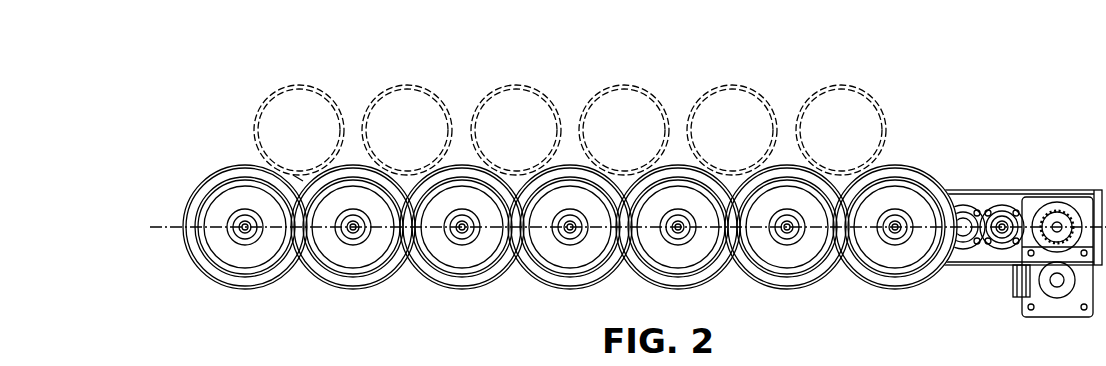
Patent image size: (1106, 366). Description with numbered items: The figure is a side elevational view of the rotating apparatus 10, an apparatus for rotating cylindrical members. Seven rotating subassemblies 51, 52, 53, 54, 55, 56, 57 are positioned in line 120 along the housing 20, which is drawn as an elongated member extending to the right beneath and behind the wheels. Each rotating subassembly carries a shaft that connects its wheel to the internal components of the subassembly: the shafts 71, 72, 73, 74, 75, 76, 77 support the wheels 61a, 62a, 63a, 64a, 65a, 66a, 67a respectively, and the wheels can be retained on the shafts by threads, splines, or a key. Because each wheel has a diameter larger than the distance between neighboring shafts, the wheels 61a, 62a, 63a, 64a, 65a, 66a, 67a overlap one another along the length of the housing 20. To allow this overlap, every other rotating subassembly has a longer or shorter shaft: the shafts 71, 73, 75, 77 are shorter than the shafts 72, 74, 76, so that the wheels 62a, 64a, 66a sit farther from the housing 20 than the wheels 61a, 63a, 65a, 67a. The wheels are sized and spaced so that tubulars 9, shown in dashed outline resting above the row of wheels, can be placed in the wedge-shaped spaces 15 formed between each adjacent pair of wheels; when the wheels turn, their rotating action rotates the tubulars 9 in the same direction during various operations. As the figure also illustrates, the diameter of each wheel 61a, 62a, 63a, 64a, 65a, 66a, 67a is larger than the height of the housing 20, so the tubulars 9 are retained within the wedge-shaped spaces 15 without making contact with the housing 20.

The rotating apparatus 10 is at (1004, 100).
The tubulars 9 is at (293, 140).
The wedge-shaped spaces 15 is at (295, 172).
The housing 20 is at (980, 265).
The rotating subassembly 51 is at (892, 158).
The rotating subassembly 52 is at (784, 158).
The rotating subassembly 53 is at (675, 158).
The rotating subassembly 54 is at (567, 158).
The rotating subassembly 55 is at (459, 158).
The rotating subassembly 56 is at (350, 158).
The rotating subassembly 57 is at (226, 163).
The wheel 61a is at (900, 164).
The wheel 62a is at (792, 164).
The wheel 63a is at (683, 164).
The wheel 64a is at (575, 164).
The wheel 65a is at (467, 164).
The wheel 66a is at (358, 164).
The wheel 67a is at (247, 165).
The shaft 71 is at (892, 231).
The shaft 72 is at (784, 231).
The shaft 73 is at (675, 231).
The shaft 74 is at (567, 231).
The shaft 75 is at (459, 231).
The shaft 76 is at (350, 231).
The shaft 77 is at (242, 231).
The line 120 is at (172, 227).